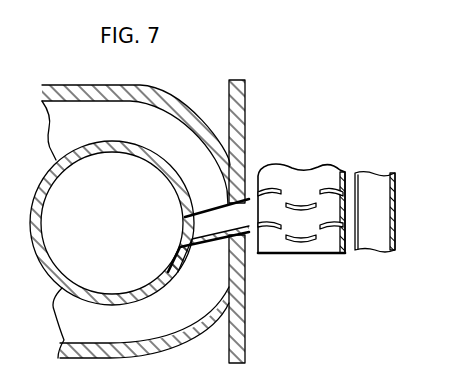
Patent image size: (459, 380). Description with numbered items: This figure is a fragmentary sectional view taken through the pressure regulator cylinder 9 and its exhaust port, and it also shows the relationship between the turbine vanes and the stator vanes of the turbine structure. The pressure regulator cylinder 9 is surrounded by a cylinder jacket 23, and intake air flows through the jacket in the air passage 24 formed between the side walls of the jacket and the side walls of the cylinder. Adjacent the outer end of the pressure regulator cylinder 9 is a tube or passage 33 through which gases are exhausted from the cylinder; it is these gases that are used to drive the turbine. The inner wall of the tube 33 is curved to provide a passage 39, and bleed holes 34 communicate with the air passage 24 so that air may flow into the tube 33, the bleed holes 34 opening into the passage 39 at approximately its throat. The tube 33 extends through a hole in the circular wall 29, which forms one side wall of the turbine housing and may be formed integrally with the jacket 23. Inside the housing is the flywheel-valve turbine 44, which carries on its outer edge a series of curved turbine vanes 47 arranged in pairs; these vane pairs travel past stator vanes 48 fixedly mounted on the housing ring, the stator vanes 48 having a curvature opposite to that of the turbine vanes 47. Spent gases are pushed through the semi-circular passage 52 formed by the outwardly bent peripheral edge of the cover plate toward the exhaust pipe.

The pressure regulator cylinder 9 is at (162, 284).
The cylinder jacket 23 is at (184, 103).
The air passage 24 is at (175, 139).
The circular wall 29 is at (246, 103).
The tube or passage 33 is at (198, 250).
The bleed hole 34 is at (205, 209).
The passage 39 is at (192, 232).
The flywheel-valve turbine 44 is at (282, 254).
The turbine vane 47 is at (275, 187).
The stator vane 48 is at (301, 243).
The semi-circular passage 52 is at (372, 246).